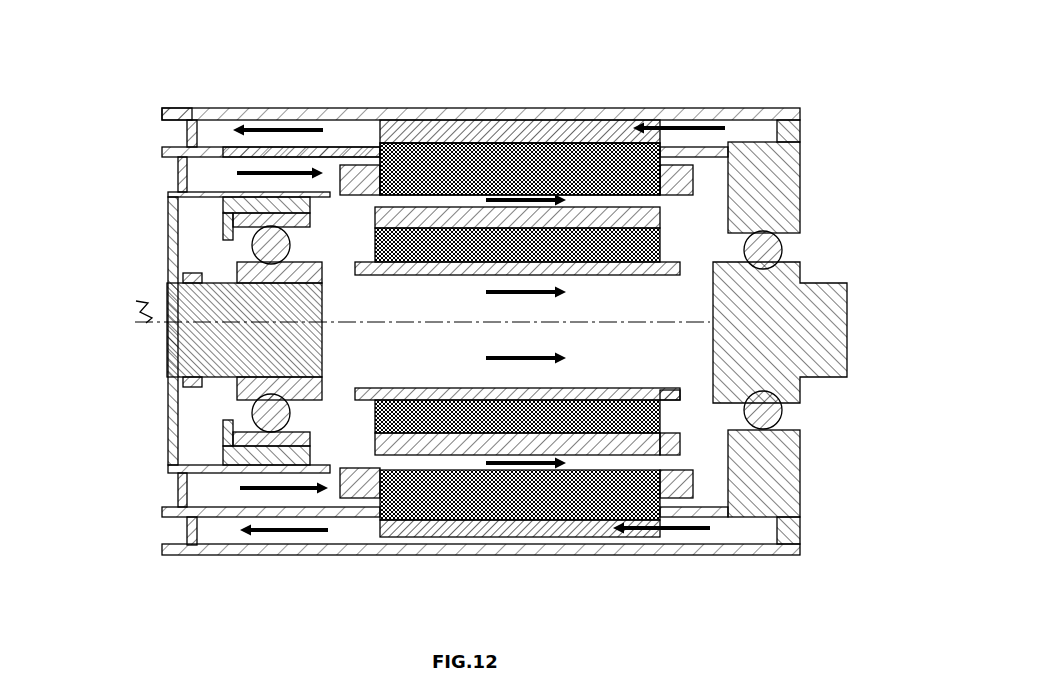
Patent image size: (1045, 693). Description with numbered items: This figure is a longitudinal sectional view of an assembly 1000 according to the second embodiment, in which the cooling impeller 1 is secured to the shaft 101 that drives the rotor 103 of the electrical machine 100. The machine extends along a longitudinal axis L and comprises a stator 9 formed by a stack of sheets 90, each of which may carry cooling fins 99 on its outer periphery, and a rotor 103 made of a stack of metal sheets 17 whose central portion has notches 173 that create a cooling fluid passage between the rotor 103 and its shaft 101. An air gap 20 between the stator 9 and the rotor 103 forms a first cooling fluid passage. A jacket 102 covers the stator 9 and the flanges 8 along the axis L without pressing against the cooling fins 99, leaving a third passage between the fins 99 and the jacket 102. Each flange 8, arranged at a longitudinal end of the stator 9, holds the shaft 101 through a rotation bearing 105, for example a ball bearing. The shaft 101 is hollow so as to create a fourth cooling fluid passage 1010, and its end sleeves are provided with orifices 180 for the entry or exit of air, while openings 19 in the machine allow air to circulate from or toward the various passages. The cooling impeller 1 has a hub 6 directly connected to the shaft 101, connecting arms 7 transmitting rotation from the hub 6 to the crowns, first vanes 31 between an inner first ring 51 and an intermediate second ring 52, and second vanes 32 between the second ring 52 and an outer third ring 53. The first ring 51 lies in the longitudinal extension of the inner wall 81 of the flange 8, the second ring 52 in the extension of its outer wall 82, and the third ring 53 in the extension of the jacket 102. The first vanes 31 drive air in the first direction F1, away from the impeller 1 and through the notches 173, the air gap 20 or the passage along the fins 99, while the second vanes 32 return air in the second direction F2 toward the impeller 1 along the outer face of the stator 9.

The assembly 1000 is at (205, 85).
The cooling impeller 1 is at (158, 188).
The electrical machine 100 is at (763, 97).
The second vanes 32 is at (187, 140).
The first vanes 31 is at (180, 175).
The outer wall 82 is at (293, 152).
The inner wall 81 is at (293, 197).
The jacket 102 is at (437, 113).
The stator 9 is at (497, 173).
The stack of sheets 90 is at (570, 167).
The first direction F1 is at (277, 170).
The second direction F2 is at (677, 128).
The air gap 20 is at (685, 203).
The fourth cooling fluid passage 1010 is at (620, 297).
The shaft 101 is at (810, 303).
The rotor 103 is at (673, 404).
The rotation bearing 105 is at (247, 412).
The flange 8 is at (790, 490).
The notches 173 is at (673, 404).
The cooling fins 99 is at (592, 540).
The metal sheets 17 is at (438, 420).
The orifices 180 is at (333, 400).
The openings 19 is at (257, 498).
The first ring 51 is at (178, 468).
The second ring 52 is at (170, 508).
The third ring 53 is at (177, 550).
The hub 6 is at (187, 281).
The connecting arms 7 is at (172, 240).
The longitudinal axis L is at (416, 308).